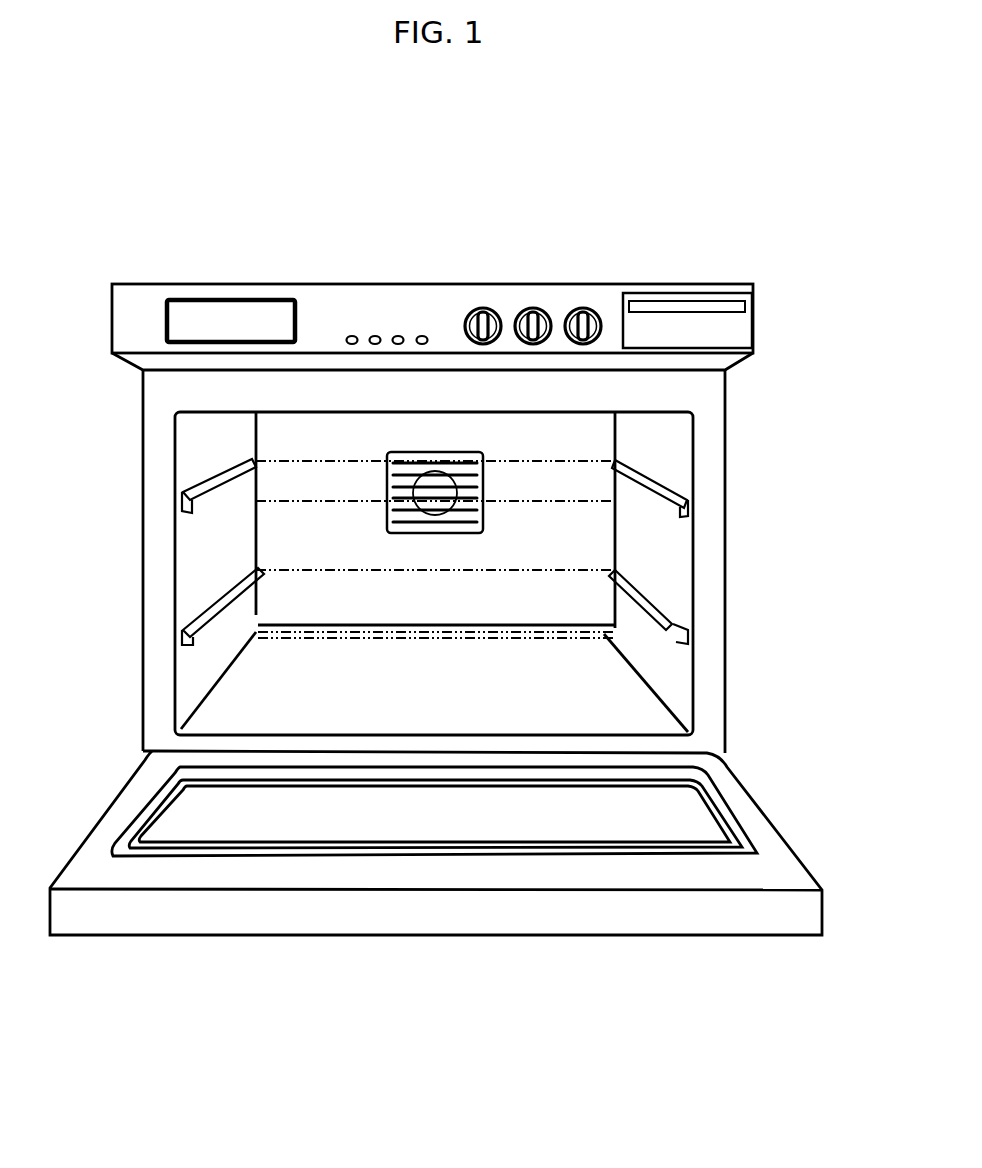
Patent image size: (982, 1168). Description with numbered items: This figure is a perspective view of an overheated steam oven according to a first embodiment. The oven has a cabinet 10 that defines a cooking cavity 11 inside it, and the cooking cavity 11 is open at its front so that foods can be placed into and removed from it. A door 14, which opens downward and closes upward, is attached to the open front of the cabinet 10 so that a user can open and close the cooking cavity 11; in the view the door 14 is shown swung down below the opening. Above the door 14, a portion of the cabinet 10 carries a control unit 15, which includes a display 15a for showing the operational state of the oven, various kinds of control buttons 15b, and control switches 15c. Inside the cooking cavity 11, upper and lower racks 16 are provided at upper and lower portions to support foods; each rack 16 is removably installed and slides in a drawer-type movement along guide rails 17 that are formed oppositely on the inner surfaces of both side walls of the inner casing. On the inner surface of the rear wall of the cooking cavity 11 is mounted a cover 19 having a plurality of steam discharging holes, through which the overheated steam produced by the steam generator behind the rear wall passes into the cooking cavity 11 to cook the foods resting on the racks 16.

The cabinet 10 is at (640, 240).
The cooking cavity 11 is at (432, 611).
The door 14 is at (452, 915).
The control unit 15 is at (345, 293).
The display 15a is at (220, 312).
The control buttons 15b is at (397, 333).
The control switches 15c is at (532, 310).
The upper and lower racks 16 is at (604, 637).
The guide rails 17 is at (215, 608).
The cover 19 is at (480, 521).